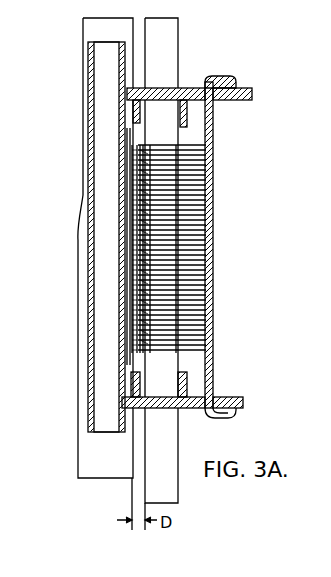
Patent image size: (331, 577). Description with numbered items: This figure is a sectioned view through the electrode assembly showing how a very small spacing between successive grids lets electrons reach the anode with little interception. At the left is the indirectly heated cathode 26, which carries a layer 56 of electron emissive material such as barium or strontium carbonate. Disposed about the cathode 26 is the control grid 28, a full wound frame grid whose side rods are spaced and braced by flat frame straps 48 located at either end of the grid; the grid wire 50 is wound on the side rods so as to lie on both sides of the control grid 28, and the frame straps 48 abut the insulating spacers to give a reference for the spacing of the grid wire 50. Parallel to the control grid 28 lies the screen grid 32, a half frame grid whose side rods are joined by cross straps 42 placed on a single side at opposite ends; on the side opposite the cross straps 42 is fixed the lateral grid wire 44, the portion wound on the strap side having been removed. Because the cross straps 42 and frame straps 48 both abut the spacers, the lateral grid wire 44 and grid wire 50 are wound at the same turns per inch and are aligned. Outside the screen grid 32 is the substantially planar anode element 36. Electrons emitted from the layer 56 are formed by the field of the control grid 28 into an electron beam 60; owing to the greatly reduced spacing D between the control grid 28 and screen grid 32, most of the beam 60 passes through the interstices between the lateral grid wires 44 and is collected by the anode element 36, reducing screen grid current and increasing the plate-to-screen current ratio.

The control grid 28 is at (88, 28).
The cathode 26 is at (90, 118).
The layer of electron emissive material 56 is at (128, 176).
The screen grid 32 is at (173, 27).
The anode element 36 is at (210, 338).
The cross strap 42 is at (192, 106).
The frame strap 48 is at (140, 113).
The electron beam 60 is at (205, 166).
The lateral grid wire 44 is at (140, 313).
The grid wire 50 is at (133, 332).